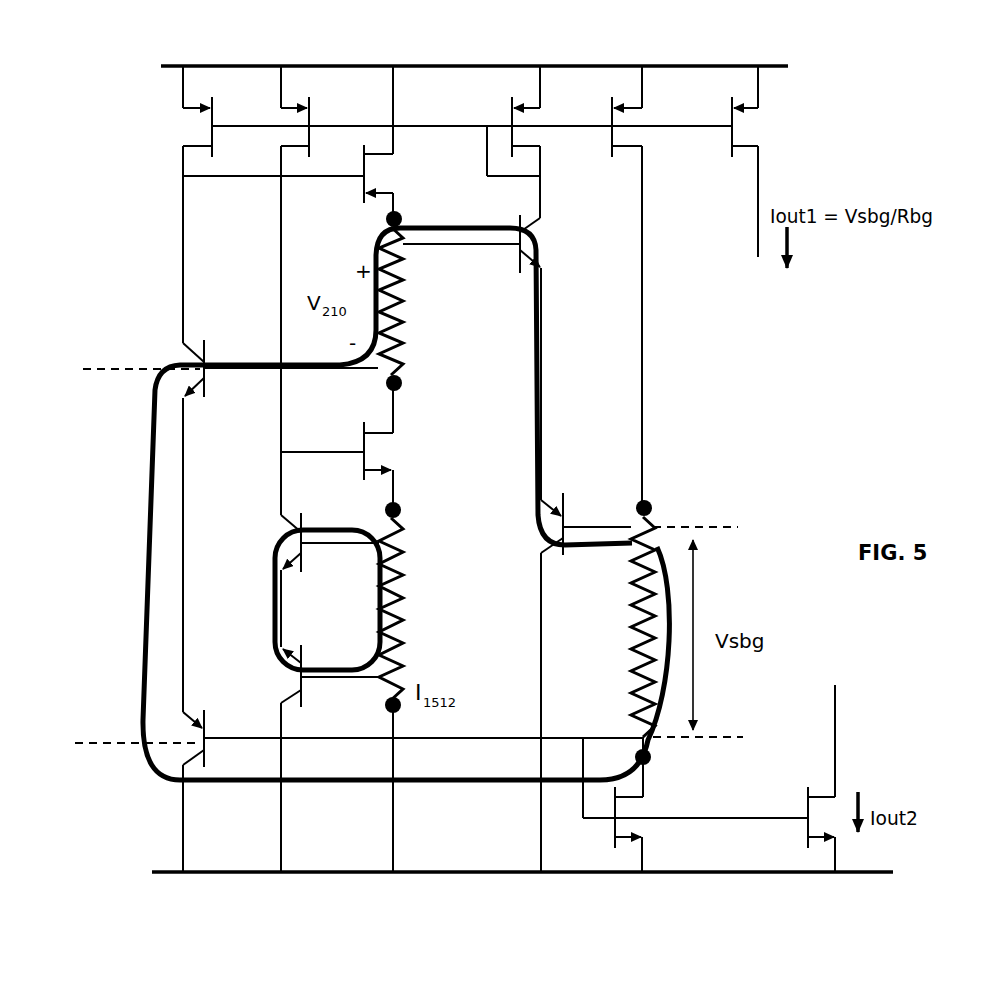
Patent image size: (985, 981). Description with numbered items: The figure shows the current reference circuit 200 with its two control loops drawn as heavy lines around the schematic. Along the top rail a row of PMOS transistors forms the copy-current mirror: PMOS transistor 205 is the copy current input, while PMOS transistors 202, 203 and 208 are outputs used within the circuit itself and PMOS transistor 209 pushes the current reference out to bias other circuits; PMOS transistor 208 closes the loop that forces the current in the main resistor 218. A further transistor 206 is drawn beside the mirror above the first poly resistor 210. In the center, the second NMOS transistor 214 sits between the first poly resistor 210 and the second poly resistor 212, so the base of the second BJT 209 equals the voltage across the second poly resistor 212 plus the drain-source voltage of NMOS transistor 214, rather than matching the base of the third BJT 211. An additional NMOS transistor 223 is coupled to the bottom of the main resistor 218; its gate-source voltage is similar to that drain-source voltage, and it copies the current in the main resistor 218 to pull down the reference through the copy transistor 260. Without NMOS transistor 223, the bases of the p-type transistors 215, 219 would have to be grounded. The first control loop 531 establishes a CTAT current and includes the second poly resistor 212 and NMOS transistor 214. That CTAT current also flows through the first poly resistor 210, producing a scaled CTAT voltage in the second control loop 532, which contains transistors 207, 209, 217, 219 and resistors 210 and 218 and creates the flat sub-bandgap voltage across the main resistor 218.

The current reference circuit 200 is at (868, 63).
The PMOS transistor 202 is at (183, 126).
The PMOS transistor 203 is at (305, 110).
The PMOS transistor 205 is at (528, 108).
The PMOS transistor 206 is at (408, 148).
The transistor 207 is at (522, 251).
The PMOS transistor 208 is at (633, 102).
The PMOS transistor / second BJT 209 is at (748, 103).
The first poly resistor 210 is at (403, 282).
The third BJT 211 is at (287, 543).
The second poly resistor 212 is at (373, 647).
The second NMOS transistor 214 is at (362, 448).
The p-type transistor 215 is at (297, 682).
The transistor 217 is at (567, 517).
The main resistor 218 is at (624, 627).
The p-type transistor 219 is at (192, 743).
The NMOS transistor 223 is at (622, 838).
The copy transistor 260 is at (832, 838).
The first control loop 531 is at (277, 572).
The second control loop 532 is at (267, 792).